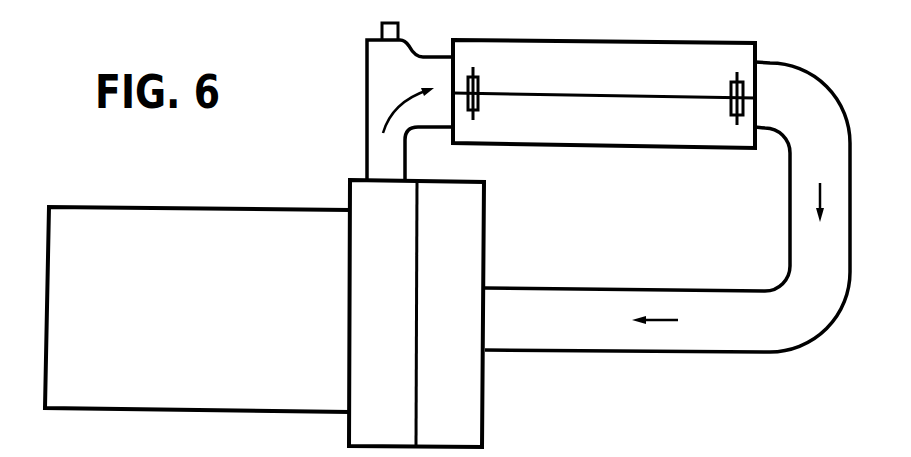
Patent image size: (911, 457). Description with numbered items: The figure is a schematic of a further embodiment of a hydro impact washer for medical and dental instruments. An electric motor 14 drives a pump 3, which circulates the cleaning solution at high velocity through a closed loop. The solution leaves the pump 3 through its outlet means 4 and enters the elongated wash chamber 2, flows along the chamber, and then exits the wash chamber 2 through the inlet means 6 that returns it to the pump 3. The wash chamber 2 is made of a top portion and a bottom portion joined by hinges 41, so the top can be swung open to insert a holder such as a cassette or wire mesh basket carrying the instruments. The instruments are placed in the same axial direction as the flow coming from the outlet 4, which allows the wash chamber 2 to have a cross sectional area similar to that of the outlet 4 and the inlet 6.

The wash chamber 2 is at (607, 125).
The pump 3 is at (460, 328).
The outlet means 4 is at (441, 98).
The inlet means 6 is at (780, 115).
The electric motor 14 is at (196, 326).
The hinges 41 is at (478, 90).